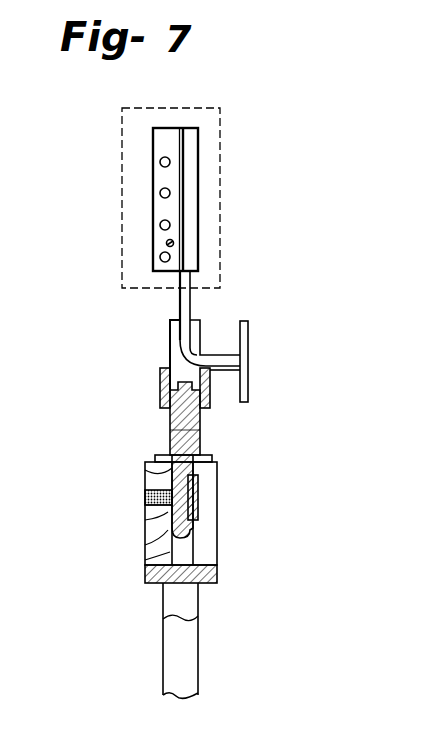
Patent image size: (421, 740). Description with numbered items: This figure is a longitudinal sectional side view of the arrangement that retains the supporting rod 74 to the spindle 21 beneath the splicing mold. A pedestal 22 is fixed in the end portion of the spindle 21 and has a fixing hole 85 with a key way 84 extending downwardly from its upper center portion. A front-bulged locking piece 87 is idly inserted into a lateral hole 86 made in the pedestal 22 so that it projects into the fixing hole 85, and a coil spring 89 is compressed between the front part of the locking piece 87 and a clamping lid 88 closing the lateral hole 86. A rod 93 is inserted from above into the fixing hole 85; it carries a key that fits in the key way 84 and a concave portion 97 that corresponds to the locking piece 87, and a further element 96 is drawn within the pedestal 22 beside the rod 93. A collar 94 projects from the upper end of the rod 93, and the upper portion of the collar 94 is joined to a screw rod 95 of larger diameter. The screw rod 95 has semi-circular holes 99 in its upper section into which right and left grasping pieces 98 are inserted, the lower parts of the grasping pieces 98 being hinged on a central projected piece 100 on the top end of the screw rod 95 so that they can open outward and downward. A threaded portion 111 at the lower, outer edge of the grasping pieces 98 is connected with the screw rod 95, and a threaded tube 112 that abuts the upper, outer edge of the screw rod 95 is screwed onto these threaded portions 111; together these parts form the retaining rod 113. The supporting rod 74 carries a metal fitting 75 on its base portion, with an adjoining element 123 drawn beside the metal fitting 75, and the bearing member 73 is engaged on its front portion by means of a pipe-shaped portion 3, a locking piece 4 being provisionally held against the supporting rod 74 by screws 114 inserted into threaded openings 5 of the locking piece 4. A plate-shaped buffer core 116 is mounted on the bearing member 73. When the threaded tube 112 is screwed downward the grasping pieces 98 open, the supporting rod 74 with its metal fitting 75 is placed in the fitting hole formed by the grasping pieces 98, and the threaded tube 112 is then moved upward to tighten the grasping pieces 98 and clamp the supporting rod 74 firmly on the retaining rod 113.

The buffer core 116 is at (125, 108).
The locking piece 4 is at (160, 137).
The bearing member 73 is at (191, 146).
The pipe-shaped portion 3 is at (190, 191).
The holes 5 is at (159, 160).
The screws 114 is at (166, 241).
The supporting rod 74 is at (179, 297).
The grasping pieces 98 is at (208, 312).
The semi-circular holes 99 is at (170, 324).
The central projected piece 100 is at (178, 372).
The metal fitting 75 is at (262, 338).
The arm 123 is at (210, 377).
The threaded tube 112 is at (160, 381).
The threaded portion 111 is at (208, 388).
The screw rod 95 is at (170, 423).
The retaining rod 113 is at (170, 440).
The collar 94 is at (212, 459).
The concave portion 97 is at (157, 462).
The key way 84 is at (221, 479).
The inner column 96 is at (197, 498).
The locking piece 87 is at (200, 517).
The clamping lid 88 is at (145, 493).
The lateral hole 86 is at (150, 507).
The coil spring 89 is at (166, 513).
The rod 93 is at (168, 520).
The fixing hole 85 is at (158, 560).
The pedestal 22 is at (206, 569).
The spindle 21 is at (205, 640).